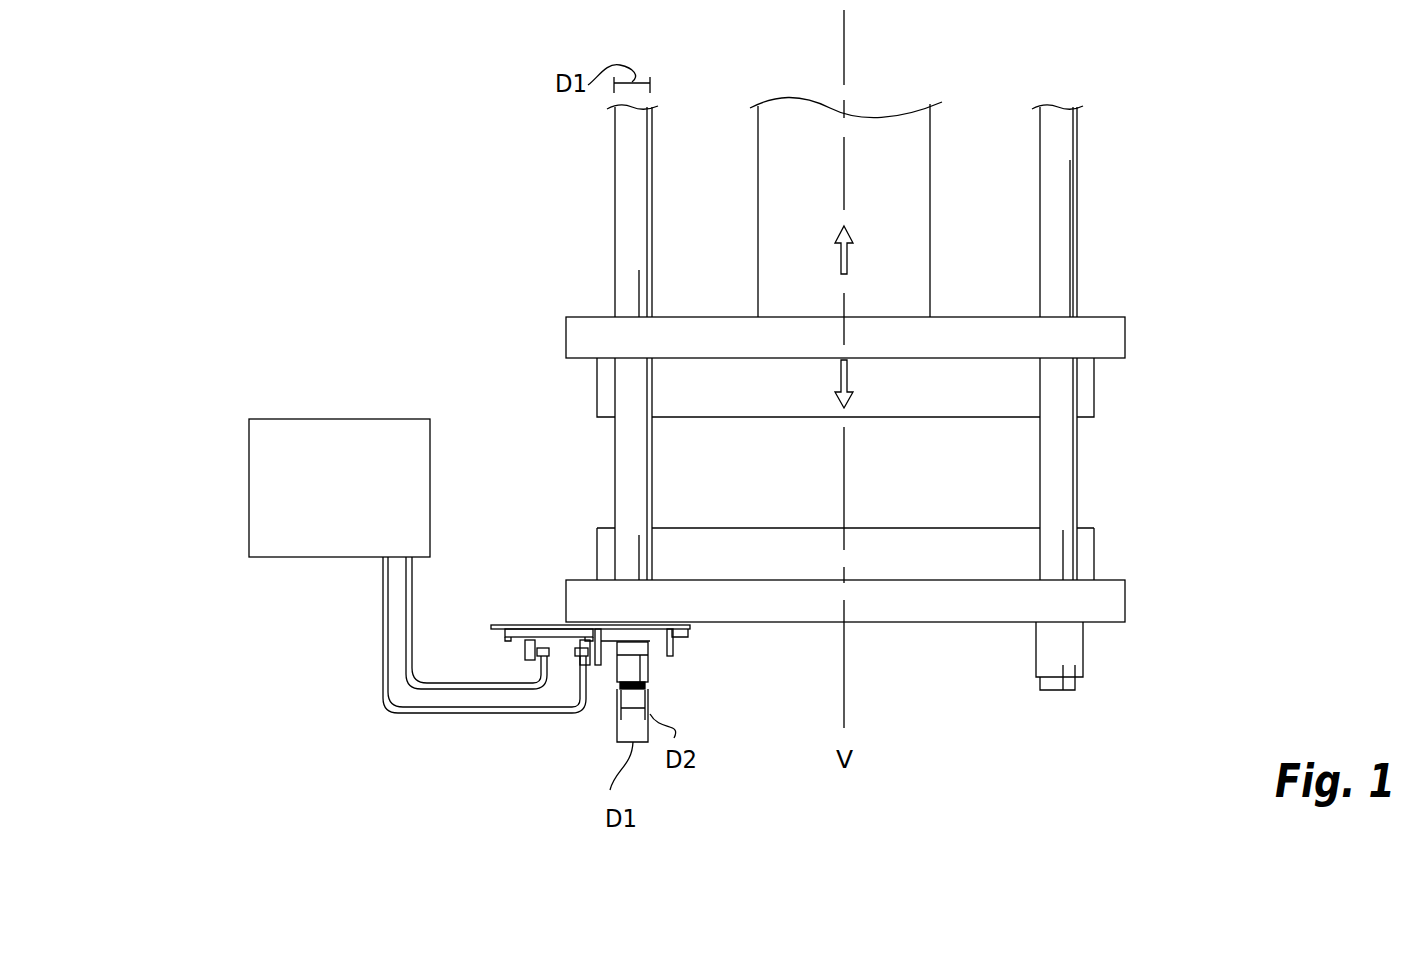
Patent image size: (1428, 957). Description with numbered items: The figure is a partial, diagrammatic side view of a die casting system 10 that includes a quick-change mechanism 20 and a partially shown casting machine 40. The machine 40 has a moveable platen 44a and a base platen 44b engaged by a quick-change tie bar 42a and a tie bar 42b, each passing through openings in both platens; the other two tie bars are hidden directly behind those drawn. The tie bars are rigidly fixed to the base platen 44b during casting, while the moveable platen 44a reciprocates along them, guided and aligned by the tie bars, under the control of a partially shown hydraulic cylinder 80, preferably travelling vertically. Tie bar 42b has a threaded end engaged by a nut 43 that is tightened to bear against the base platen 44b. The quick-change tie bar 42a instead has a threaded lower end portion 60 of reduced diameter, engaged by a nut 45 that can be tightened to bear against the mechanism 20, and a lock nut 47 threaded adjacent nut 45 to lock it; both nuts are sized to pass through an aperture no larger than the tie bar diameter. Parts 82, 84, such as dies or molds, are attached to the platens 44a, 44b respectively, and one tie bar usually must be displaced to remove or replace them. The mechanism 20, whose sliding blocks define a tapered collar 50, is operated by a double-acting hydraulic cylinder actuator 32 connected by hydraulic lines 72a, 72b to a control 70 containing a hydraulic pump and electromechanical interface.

The die casting system 10 is at (432, 130).
The quick-change mechanism 20 is at (541, 622).
The double-acting hydraulic cylinder actuator 32 is at (525, 652).
The casting machine 40 is at (1128, 580).
The quick-change tie bar 42a is at (620, 127).
The tie bar 42b is at (1055, 188).
The nut 43 is at (1058, 650).
The moveable platen 44a is at (720, 317).
The base platen 44b is at (768, 580).
The nut 45 is at (650, 648).
The lock nut 47 is at (650, 678).
The tapered collar 50 is at (618, 655).
The lower end portion 60 is at (609, 685).
The control 70 is at (327, 521).
The hydraulic line 72a is at (383, 620).
The hydraulic line 72b is at (412, 595).
The hydraulic cylinder 80 is at (930, 148).
The part 82 is at (888, 418).
The part 84 is at (960, 527).